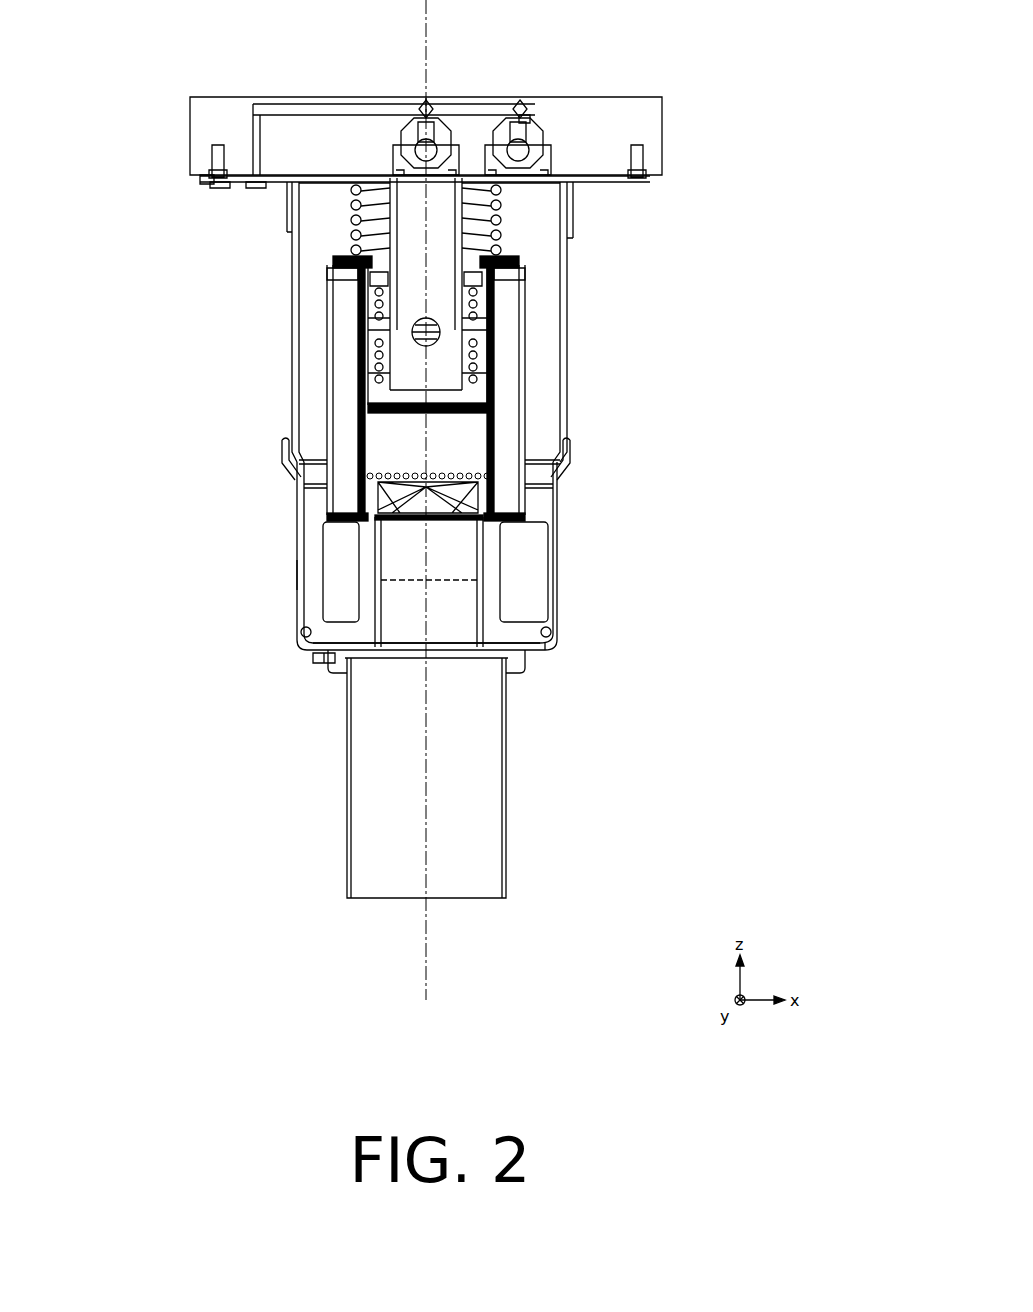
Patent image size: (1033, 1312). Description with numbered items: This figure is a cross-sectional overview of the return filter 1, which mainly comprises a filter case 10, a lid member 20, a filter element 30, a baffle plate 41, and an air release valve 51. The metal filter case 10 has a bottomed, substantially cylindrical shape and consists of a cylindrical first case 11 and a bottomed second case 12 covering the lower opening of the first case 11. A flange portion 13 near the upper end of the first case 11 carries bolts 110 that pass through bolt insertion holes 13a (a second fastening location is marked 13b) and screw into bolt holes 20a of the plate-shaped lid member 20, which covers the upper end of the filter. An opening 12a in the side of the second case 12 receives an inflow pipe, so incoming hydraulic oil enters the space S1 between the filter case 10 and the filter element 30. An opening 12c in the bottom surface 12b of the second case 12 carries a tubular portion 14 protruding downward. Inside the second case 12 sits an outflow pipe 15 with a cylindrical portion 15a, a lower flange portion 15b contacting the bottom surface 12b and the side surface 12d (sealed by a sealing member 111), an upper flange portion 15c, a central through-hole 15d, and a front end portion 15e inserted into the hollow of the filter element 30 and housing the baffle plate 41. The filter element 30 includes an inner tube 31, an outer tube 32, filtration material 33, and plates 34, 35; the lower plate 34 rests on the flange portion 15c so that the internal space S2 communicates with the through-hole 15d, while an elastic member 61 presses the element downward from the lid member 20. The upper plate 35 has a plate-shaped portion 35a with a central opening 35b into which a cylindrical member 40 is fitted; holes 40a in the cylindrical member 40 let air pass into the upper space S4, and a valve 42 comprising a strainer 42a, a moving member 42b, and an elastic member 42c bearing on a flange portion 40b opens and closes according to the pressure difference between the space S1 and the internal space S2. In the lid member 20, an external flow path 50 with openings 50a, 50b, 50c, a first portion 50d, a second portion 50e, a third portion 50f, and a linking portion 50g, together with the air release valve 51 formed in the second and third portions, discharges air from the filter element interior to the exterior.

The return filter 1 is at (713, 61).
The filter case 10 is at (175, 690).
The first case 11 is at (292, 282).
The second case 12 is at (300, 542).
The opening 12a is at (297, 575).
The bottom surface 12b is at (345, 652).
The opening 12c is at (330, 647).
The side surface 12d is at (303, 632).
The flange portion 13 is at (288, 205).
The bolt insertion holes 13a is at (218, 185).
The base plate fastening portion 13b is at (253, 183).
The tubular portion 14 is at (347, 742).
The outflow pipe 15 is at (657, 510).
The cylindrical portion 15a is at (492, 565).
The flange portion 15b is at (548, 625).
The flange portion 15c is at (530, 530).
The through-hole 15d is at (462, 588).
The front end portion 15e is at (512, 522).
The lid member 20 is at (667, 135).
The bolt holes 20a is at (197, 178).
The filter element 30 is at (645, 288).
The inner tube 31 is at (527, 420).
The outer tube 32 is at (490, 392).
The filtration material 33 is at (505, 410).
The plate 34 is at (565, 452).
The plate 35 is at (491, 300).
The plate-shaped portion 35a is at (497, 292).
The opening 35b is at (497, 262).
The cylindrical member 40 is at (476, 232).
The holes 40a is at (372, 372).
The flange portion 40b is at (370, 330).
The baffle plate 41 is at (375, 492).
The valve 42 is at (200, 293).
The strainer 42a is at (378, 352).
The moving member 42b is at (378, 292).
The elastic member 42c is at (376, 318).
The external flow path 50 is at (551, 30).
The opening 50a is at (262, 108).
The opening 50b is at (426, 100).
The opening 50c is at (518, 108).
The first portion 50d is at (254, 104).
The second portion 50e is at (432, 115).
The third portion 50f is at (526, 118).
The linking portion 50g is at (340, 115).
The air release valve 51 is at (537, 132).
The elastic member 61 is at (352, 205).
The bolts 110 is at (212, 152).
The sealing member 111 is at (548, 652).
The space S1 is at (382, 512).
The internal space S2 is at (300, 456).
The space S4 is at (656, 178).